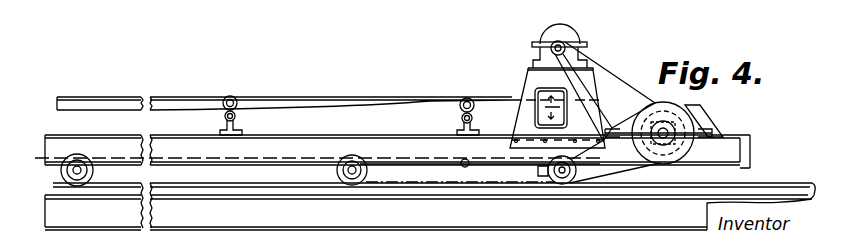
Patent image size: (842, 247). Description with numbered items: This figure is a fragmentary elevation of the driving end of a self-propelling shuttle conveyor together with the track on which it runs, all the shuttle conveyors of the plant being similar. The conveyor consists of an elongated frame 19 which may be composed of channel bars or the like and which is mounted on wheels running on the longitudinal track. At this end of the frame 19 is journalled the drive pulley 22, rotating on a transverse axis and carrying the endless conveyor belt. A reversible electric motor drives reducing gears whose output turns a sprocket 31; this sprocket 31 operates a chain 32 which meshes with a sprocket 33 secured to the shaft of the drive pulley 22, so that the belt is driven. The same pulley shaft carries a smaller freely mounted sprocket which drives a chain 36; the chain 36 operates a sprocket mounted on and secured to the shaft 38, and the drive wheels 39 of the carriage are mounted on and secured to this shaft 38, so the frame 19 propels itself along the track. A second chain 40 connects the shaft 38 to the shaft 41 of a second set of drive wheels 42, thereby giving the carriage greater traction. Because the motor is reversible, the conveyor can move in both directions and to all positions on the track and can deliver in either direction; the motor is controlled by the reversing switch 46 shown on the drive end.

The frame 19 is at (185, 148).
The drive pulley 22 is at (708, 118).
The sprocket 31 is at (561, 42).
The chain 32 is at (608, 70).
The sprocket 33 is at (708, 113).
The chain 36 is at (596, 168).
The shaft 38 is at (561, 184).
The drive wheels 39 is at (537, 171).
The second chain 40 is at (398, 157).
The shaft 41 is at (352, 182).
The second set of drive wheels 42 is at (352, 155).
The reversing switch 46 is at (567, 107).